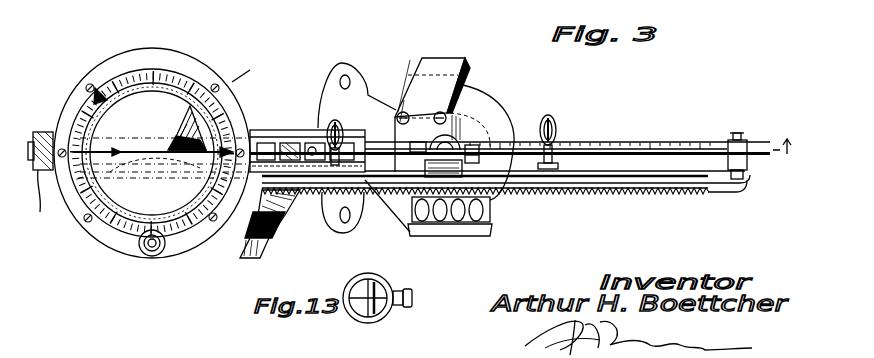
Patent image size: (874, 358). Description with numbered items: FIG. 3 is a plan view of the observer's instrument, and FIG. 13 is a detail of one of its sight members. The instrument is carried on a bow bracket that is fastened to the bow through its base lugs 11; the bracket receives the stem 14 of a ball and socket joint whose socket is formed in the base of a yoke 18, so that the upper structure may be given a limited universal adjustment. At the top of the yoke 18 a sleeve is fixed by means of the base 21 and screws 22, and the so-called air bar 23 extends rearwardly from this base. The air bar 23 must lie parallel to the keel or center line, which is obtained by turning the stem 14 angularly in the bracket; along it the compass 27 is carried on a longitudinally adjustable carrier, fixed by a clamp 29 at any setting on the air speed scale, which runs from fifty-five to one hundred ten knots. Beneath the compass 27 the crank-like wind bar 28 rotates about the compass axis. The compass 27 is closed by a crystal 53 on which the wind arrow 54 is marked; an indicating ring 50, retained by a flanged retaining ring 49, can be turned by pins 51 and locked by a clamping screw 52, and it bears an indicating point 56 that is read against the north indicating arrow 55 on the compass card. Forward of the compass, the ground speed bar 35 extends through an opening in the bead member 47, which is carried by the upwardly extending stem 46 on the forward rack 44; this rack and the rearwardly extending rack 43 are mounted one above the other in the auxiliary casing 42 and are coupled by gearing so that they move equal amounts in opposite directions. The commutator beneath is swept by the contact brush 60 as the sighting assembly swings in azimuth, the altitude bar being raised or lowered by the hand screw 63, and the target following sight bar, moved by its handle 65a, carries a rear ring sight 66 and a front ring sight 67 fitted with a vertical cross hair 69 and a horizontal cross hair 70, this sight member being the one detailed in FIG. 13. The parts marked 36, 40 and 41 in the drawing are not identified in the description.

In FIG. 3, the base lugs 11 is at (360, 70).
In FIG. 3, the stem 14 is at (787, 152).
In FIG. 3, the yoke 18 is at (460, 62).
In FIG. 3, the base 21 is at (462, 124).
In FIG. 3, the screws 22 is at (458, 112).
In FIG. 3, the air bar 23 is at (294, 128).
In FIG. 3, the compass 27 is at (176, 56).
In FIG. 3, the wind bar 28 is at (52, 132).
In FIG. 3, the clamp 29 is at (45, 203).
In FIG. 3, the ground speed bar 35 is at (652, 146).
In FIG. 3, the bearing block 36 is at (469, 125).
In FIG. 3, the slide block 40 is at (742, 138).
In FIG. 3, the indicator 41 is at (267, 153).
In FIG. 3, the auxiliary casing 42 is at (488, 194).
In FIG. 3, the rack 43 is at (258, 204).
In FIG. 3, the forward rack 44 is at (730, 192).
In FIG. 3, the stem 46 is at (750, 175).
In FIG. 3, the bead member 47 is at (748, 146).
In FIG. 3, the flanged retaining ring 49 is at (238, 98).
In FIG. 3, the indicating ring 50 is at (187, 108).
In FIG. 3, the pins 51 is at (222, 212).
In FIG. 3, the clamping screw 52 is at (158, 253).
In FIG. 3, the crystal 53 is at (250, 70).
In FIG. 3, the wind arrow 54 is at (140, 152).
In FIG. 3, the north indicating arrow 55 is at (176, 138).
In FIG. 3, the indicating point 56 is at (98, 92).
In FIG. 3, the contact brush 60 is at (557, 126).
In FIG. 13, the contact brush 60 is at (380, 293).
In FIG. 3, the hand screw 63 is at (364, 204).
In FIG. 3, the handle 65a is at (493, 229).
In FIG. 3, the rear ring sight 66 is at (344, 134).
In FIG. 13, the rear ring sight 66 is at (362, 322).
In FIG. 3, the front ring sight 67 is at (586, 146).
In FIG. 3, the vertical cross hair 69 is at (334, 120).
In FIG. 13, the vertical cross hair 69 is at (399, 306).
In FIG. 3, the horizontal cross hair 70 is at (342, 124).
In FIG. 13, the horizontal cross hair 70 is at (373, 282).